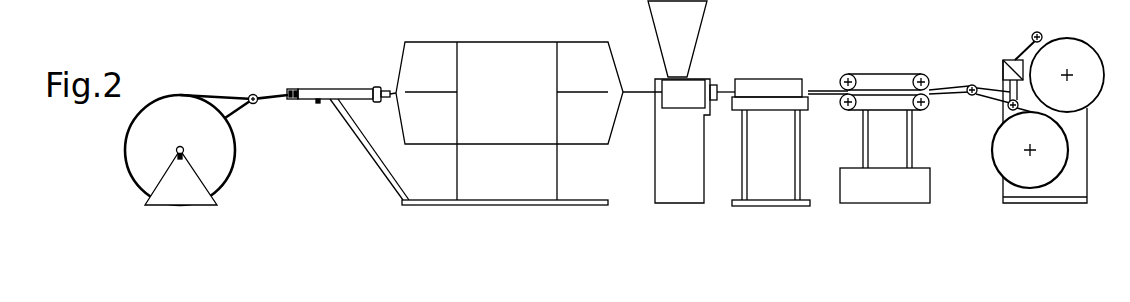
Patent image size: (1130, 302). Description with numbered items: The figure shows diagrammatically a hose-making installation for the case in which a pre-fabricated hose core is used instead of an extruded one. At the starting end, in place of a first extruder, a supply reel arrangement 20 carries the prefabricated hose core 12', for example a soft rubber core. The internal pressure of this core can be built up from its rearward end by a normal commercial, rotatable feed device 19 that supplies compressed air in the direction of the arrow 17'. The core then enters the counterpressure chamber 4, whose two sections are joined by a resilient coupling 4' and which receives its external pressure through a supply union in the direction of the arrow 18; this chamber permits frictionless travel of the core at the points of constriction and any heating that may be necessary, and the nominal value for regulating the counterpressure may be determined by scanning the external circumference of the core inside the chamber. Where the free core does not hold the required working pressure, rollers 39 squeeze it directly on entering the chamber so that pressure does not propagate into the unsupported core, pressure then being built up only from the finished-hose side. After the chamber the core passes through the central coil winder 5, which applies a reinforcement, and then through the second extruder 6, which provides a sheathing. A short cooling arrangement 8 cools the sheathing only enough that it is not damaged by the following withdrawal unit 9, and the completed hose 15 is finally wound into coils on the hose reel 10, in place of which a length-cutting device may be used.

The counterpressure chamber 4 is at (335, 71).
The resilient coupling 4' is at (386, 72).
The central coil winder 5 is at (521, 36).
The second extruder 6 is at (710, 63).
The cooling arrangement 8 is at (784, 68).
The withdrawal unit 9 is at (882, 61).
The hose reel 10 is at (1009, 45).
The prefabricated hose core 12' is at (234, 82).
The completed hose 15 is at (955, 97).
The arrow 17' is at (181, 196).
The arrow 18 is at (318, 108).
The rotatable feed device 19 is at (183, 147).
The supply reel arrangement 20 is at (239, 181).
The rollers 39 is at (291, 89).